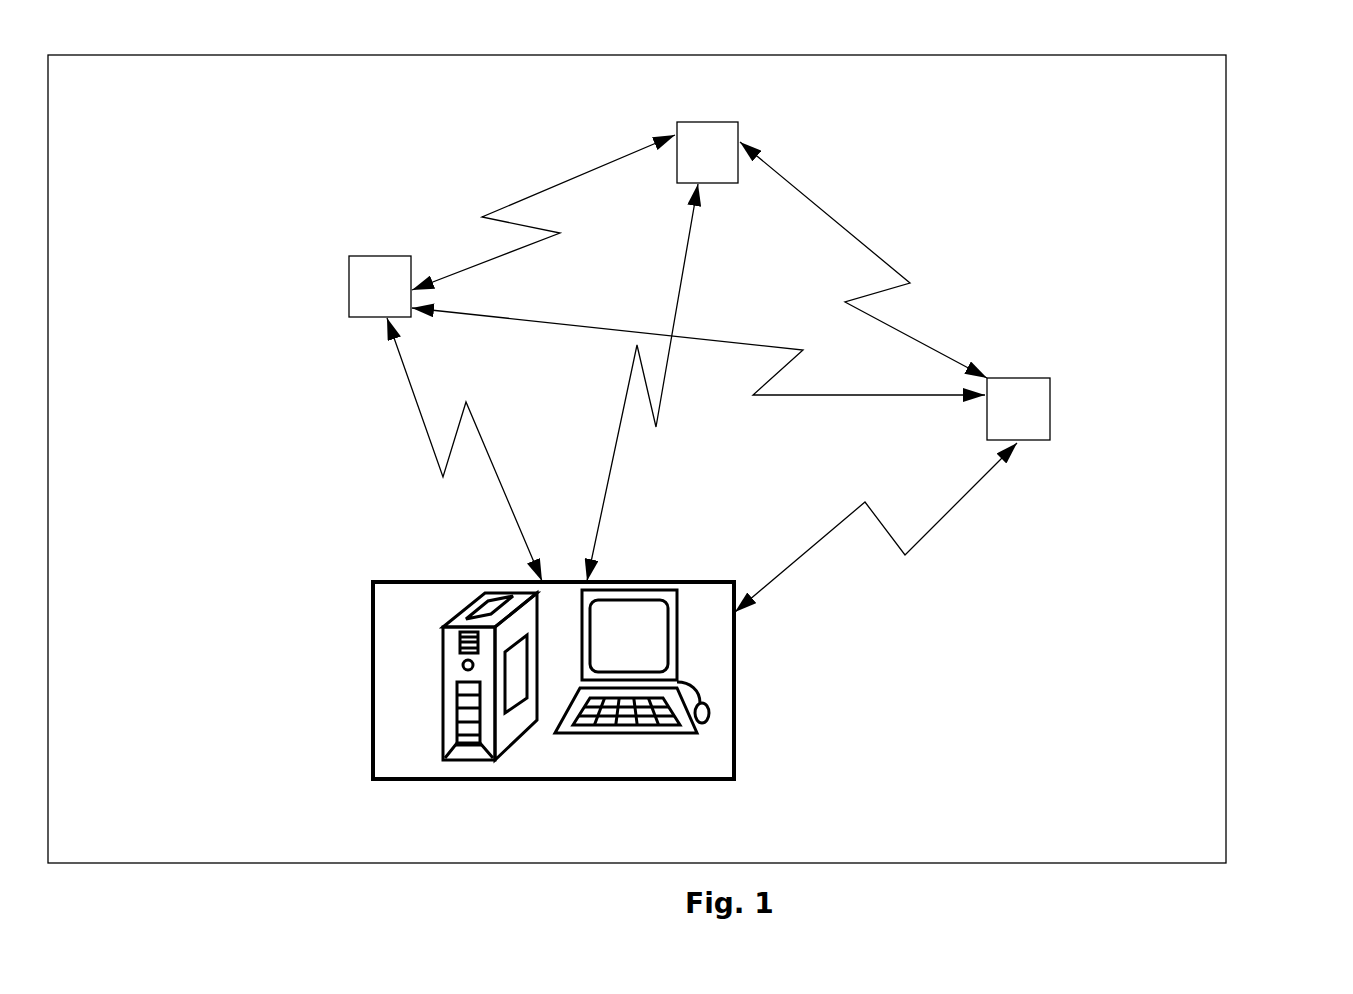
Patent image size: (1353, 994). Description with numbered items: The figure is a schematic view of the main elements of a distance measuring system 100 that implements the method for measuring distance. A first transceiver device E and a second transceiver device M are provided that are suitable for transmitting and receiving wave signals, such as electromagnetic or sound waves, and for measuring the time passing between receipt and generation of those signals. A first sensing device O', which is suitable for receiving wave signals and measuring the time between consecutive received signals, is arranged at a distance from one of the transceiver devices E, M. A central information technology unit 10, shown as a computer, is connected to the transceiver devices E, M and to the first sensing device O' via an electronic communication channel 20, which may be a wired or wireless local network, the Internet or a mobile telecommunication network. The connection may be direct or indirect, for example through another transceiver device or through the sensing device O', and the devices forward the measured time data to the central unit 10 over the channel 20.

The distance measuring system 100 is at (1227, 189).
The central information technology unit 10 is at (372, 633).
The electronic communication channel 20 is at (867, 502).
The first transceiver device E is at (675, 150).
The second transceiver device M is at (348, 279).
The first sensing device O' is at (1063, 433).